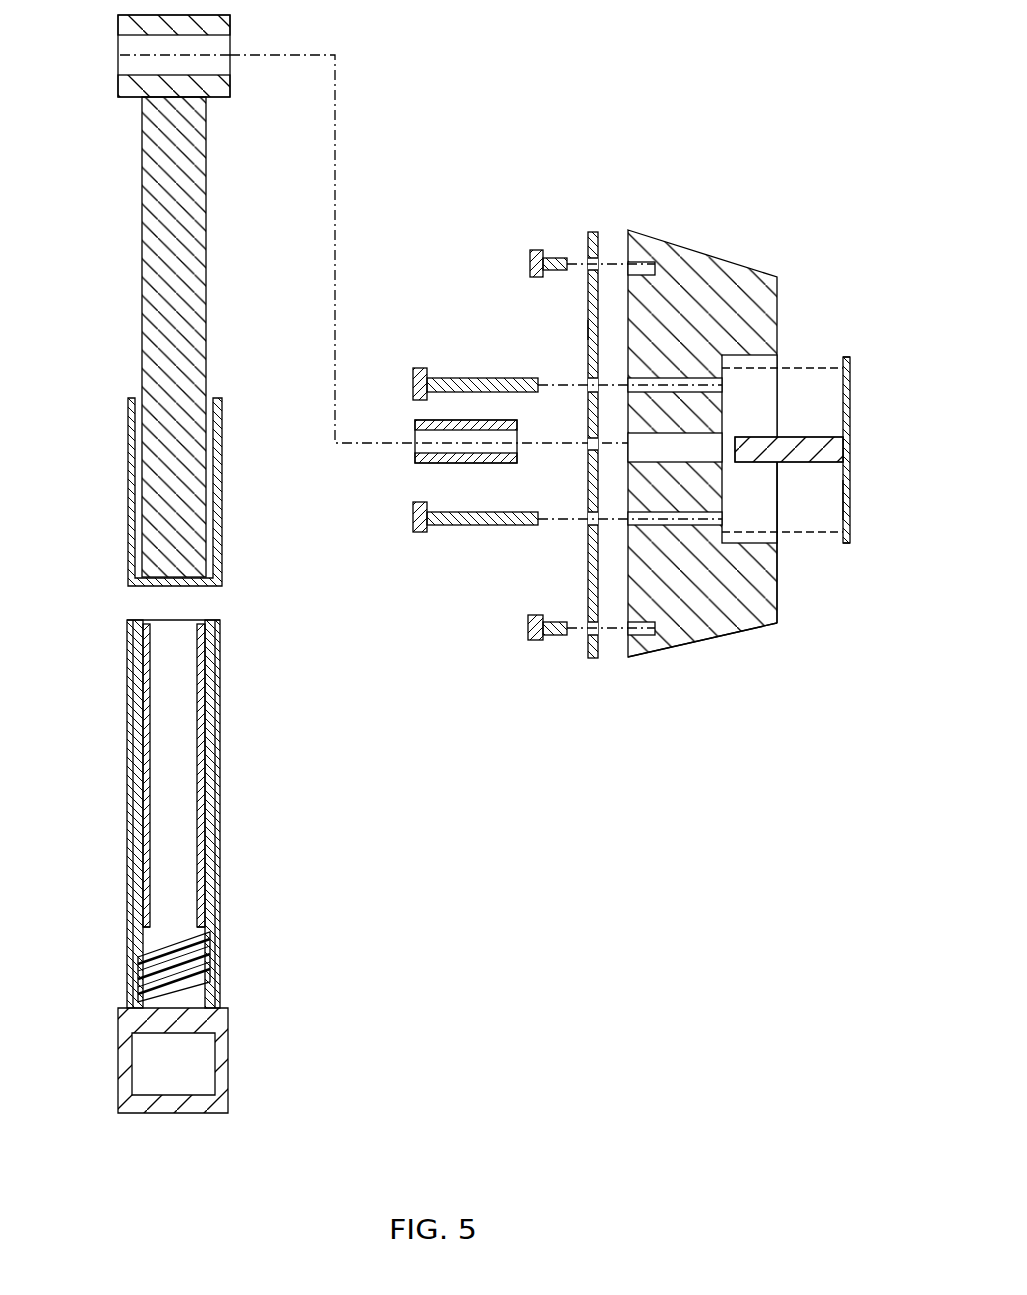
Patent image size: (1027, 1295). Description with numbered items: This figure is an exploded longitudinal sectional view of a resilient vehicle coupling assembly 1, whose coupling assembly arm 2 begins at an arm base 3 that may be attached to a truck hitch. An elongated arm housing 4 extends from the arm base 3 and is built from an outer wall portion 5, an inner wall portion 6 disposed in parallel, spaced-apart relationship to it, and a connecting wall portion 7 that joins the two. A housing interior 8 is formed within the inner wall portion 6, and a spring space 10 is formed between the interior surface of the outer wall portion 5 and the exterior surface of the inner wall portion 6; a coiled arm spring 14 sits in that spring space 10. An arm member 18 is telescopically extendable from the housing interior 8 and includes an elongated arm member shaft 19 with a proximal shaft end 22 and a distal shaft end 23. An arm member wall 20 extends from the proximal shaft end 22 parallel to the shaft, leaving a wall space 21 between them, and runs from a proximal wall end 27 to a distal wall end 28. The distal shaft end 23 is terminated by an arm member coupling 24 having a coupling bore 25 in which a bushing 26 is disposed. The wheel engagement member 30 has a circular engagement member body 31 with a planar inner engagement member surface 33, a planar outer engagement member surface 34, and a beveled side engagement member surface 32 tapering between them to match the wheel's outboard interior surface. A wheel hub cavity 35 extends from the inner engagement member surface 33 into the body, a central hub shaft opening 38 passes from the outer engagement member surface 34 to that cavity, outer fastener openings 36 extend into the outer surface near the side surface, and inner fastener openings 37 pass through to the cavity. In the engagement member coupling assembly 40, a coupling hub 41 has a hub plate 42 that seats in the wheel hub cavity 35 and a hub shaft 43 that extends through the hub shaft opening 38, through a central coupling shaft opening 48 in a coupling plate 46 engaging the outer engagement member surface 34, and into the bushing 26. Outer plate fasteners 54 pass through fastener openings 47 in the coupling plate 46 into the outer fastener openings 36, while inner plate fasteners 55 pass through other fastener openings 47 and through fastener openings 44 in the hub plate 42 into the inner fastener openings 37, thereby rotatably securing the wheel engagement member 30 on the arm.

The vehicle coupling assembly 1 is at (530, 100).
The coupling assembly arm 2 is at (210, 851).
The arm base 3 is at (228, 1060).
The arm housing 4 is at (222, 877).
The outer wall portion 5 is at (216, 690).
The inner wall portion 6 is at (217, 730).
The connecting wall portion 7 is at (200, 621).
The housing interior 8 is at (142, 682).
The spring space 10 is at (203, 660).
The coiled arm spring 14 is at (200, 1000).
The arm member 18 is at (174, 296).
The arm member shaft 19 is at (165, 280).
The arm member wall 20 is at (186, 487).
The wall space 21 is at (205, 520).
The proximal shaft end 22 is at (150, 590).
The distal shaft end 23 is at (174, 82).
The arm member coupling 24 is at (236, 100).
The coupling bore 25 is at (232, 50).
The bushing 26 is at (430, 462).
The proximal wall end 27 is at (217, 590).
The distal wall end 28 is at (215, 400).
The wheel engagement member 30 is at (670, 463).
The engagement member body 31 is at (700, 454).
The side engagement member surface 32 is at (740, 640).
The inner engagement member surface 33 is at (778, 598).
The outer engagement member surface 34 is at (545, 426).
The wheel hub cavity 35 is at (738, 540).
The outer fastener openings 36 is at (650, 265).
The inner fastener openings 37 is at (660, 378).
The central hub shaft opening 38 is at (645, 442).
The engagement member coupling assembly 40 is at (567, 431).
The coupling hub 41 is at (835, 432).
The hub plate 42 is at (852, 500).
The hub shaft 43 is at (830, 438).
The fastener openings 44 is at (850, 365).
The coupling plate 46 is at (590, 330).
The fastener openings 47 is at (590, 262).
The central coupling shaft opening 48 is at (588, 445).
The outer plate fasteners 54 is at (535, 280).
The inner plate fasteners 55 is at (450, 378).